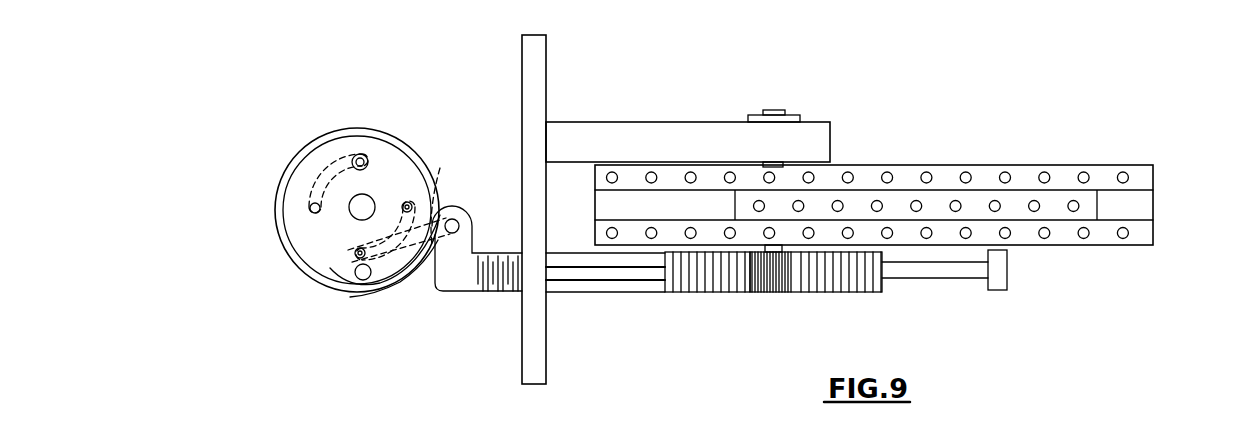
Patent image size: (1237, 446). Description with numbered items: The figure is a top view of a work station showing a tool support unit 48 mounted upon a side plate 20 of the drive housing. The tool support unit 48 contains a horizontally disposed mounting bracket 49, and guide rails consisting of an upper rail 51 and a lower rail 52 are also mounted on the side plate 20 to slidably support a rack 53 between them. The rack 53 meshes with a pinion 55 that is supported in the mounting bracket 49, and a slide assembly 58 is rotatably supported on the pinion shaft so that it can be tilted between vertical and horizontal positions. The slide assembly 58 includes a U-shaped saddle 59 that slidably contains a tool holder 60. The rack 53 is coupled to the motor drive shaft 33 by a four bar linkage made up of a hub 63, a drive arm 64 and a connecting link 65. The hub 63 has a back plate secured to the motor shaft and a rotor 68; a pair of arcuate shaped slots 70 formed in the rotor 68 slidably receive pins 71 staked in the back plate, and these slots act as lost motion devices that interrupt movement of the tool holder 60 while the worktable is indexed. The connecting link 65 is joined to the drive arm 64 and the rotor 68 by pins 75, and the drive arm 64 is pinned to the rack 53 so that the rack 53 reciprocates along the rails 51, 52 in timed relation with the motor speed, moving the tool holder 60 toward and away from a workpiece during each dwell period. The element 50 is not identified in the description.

The side plate 20 is at (522, 368).
The motor drive shaft 33 is at (364, 198).
The tool support unit 48 is at (614, 111).
The mounting bracket 49 is at (812, 131).
The rod 50 is at (585, 294).
The upper rail 51 is at (962, 283).
The lower rail 52 is at (997, 270).
The rack 53 is at (679, 298).
The pinion 55 is at (770, 294).
The slide assembly 58 is at (916, 179).
The U-shaped saddle 59 is at (1155, 172).
The tool holder 60 is at (1052, 198).
The hub 63 is at (265, 180).
The drive arm 64 is at (463, 295).
The connecting link 65 is at (387, 288).
The rotor 68 is at (307, 238).
The arcuate shaped slots 70 is at (313, 177).
The pins 71 is at (358, 156).
The pins 75 is at (355, 273).